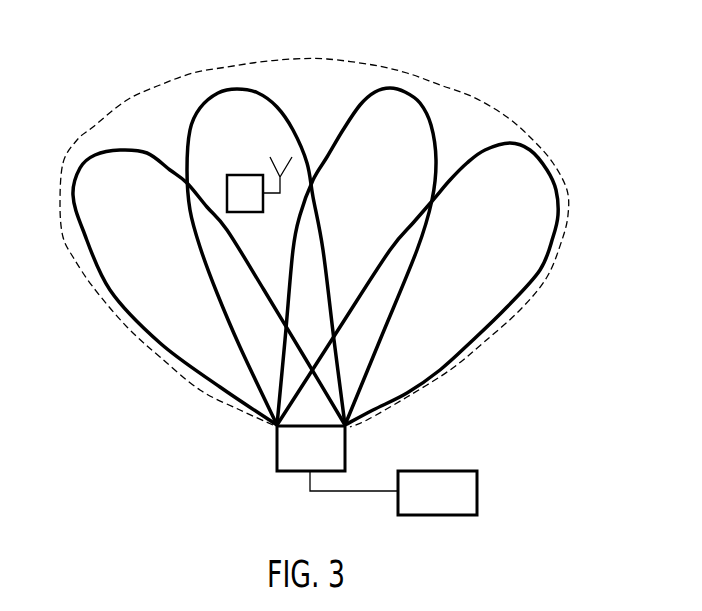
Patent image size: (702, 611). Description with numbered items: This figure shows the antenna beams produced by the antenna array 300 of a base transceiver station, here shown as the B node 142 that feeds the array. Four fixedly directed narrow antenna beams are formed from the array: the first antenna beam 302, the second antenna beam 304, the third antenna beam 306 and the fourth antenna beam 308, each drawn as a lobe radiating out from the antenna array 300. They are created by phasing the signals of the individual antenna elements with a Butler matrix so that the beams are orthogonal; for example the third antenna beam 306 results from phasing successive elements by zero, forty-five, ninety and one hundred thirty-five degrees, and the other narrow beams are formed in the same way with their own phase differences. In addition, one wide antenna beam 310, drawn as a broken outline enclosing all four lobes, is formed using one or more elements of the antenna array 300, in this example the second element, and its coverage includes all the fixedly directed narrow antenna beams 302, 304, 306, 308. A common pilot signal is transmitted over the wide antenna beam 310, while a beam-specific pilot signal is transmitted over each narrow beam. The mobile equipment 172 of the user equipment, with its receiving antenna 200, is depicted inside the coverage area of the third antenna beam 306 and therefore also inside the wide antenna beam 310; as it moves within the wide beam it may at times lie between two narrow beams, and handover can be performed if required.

The wide antenna beam 310 is at (221, 76).
The fourth antenna beam 308 is at (145, 150).
The third antenna beam 306 is at (286, 117).
The second antenna beam 304 is at (434, 145).
The first antenna beam 302 is at (524, 143).
The mobile equipment 172 is at (253, 177).
The antenna 200 is at (268, 196).
The antenna array 300 is at (277, 452).
The B node 142 is at (478, 483).